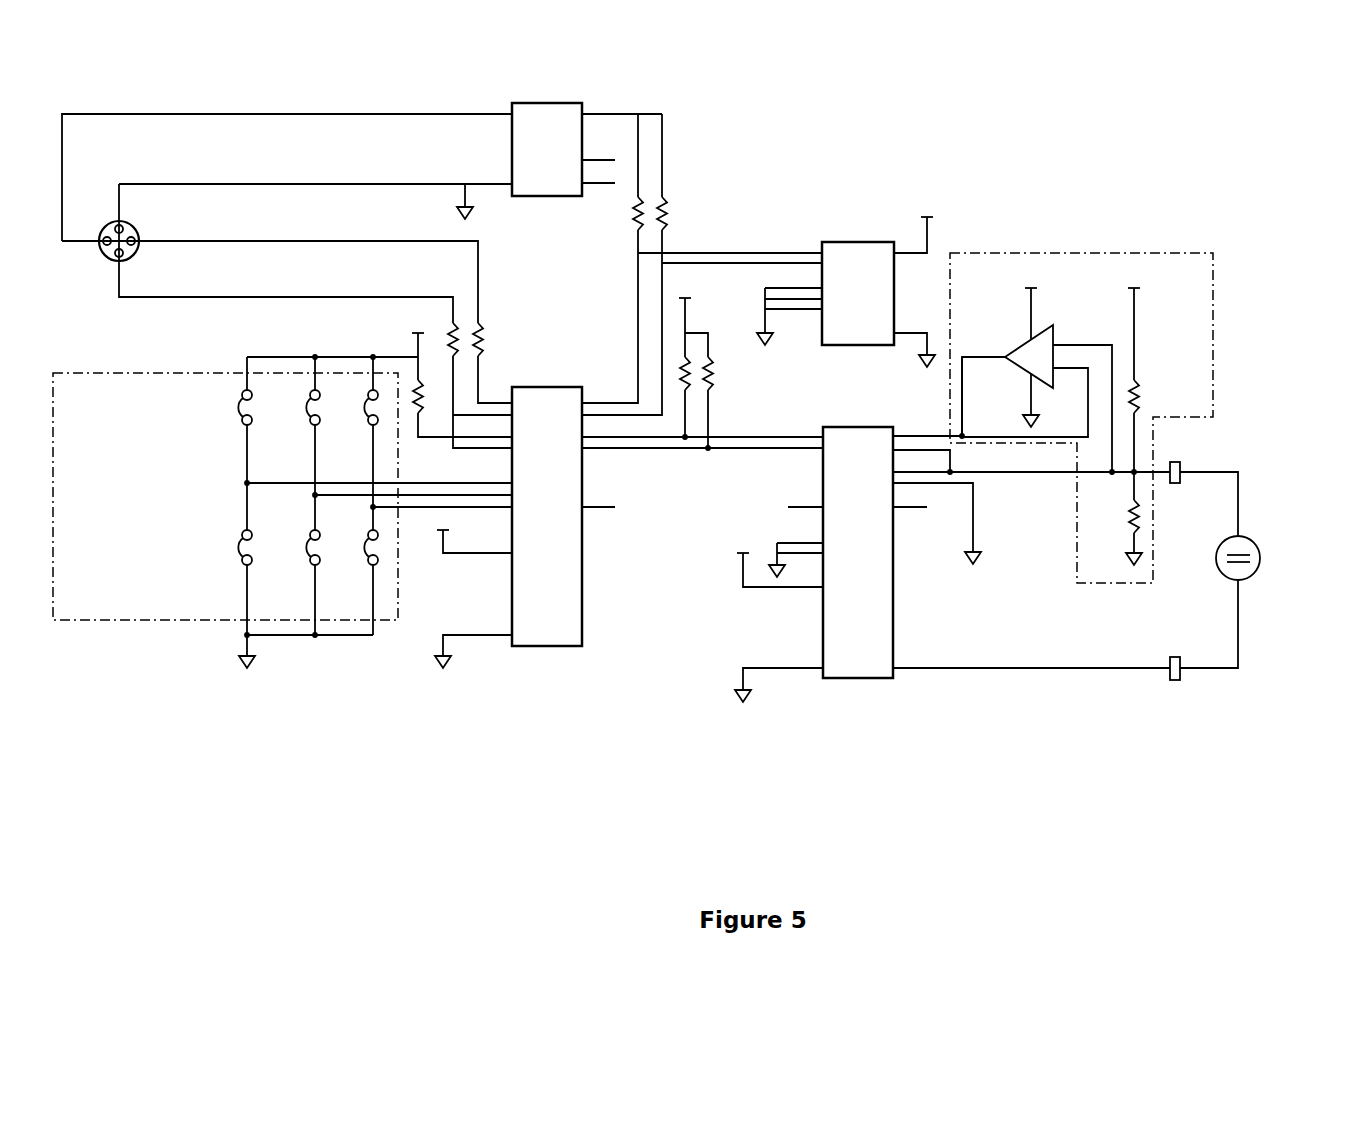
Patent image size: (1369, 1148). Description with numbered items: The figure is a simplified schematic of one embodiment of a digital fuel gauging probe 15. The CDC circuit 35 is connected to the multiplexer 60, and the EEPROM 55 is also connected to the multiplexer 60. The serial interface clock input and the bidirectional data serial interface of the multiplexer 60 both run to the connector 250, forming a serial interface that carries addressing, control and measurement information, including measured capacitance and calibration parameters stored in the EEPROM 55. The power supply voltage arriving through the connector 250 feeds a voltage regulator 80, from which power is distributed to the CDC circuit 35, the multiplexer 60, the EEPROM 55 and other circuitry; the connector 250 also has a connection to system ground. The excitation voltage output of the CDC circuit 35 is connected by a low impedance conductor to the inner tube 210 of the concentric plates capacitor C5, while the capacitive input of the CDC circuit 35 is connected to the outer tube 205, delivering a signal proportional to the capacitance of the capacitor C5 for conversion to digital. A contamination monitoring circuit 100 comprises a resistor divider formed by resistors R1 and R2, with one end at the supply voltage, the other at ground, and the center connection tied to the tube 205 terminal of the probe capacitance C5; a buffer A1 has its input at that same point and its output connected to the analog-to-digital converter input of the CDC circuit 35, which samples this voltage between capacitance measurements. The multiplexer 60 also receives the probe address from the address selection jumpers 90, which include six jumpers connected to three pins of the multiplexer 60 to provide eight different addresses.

The digital fuel gauging probe 15 is at (1000, 160).
The connector 250 is at (103, 257).
The voltage regulator 80 is at (544, 181).
The EEPROM 55 is at (846, 297).
The multiplexer 60 is at (551, 546).
The CDC circuit 35 is at (858, 569).
The address selection jumpers 90 is at (225, 511).
The contamination monitoring circuit 100 is at (1083, 418).
The buffer A1 is at (1038, 381).
The resistor R1 is at (1117, 531).
The resistor R2 is at (1157, 394).
The concentric plates capacitor C5 is at (1268, 571).
The outer tube 205 is at (1230, 550).
The inner tube 210 is at (1232, 572).